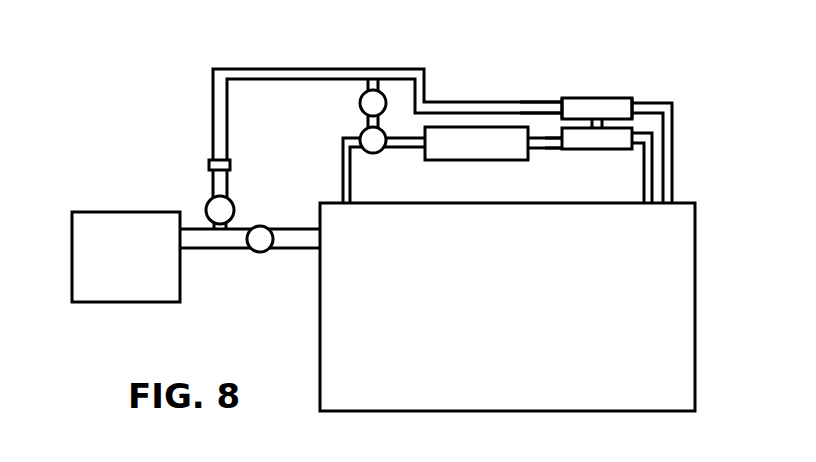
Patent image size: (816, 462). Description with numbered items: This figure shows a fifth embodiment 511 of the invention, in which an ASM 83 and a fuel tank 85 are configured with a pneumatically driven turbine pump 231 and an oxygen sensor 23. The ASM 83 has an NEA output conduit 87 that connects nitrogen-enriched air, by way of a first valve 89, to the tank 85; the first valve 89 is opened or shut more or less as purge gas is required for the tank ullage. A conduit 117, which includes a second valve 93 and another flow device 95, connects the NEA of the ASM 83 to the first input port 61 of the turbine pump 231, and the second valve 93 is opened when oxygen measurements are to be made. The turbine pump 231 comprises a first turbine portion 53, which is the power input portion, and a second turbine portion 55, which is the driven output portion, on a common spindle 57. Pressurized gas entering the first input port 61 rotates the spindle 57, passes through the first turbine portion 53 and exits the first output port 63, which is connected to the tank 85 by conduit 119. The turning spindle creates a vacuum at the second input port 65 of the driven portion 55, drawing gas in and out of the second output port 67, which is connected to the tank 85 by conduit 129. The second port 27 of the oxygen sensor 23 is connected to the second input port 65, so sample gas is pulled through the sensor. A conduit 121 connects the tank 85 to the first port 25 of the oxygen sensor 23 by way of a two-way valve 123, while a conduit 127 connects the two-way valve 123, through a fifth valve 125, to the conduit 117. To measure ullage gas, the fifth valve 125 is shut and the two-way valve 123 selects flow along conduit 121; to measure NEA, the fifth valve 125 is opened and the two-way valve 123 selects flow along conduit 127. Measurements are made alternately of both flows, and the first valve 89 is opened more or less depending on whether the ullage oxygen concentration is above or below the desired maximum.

The fifth embodiment 511 is at (143, 65).
The turbine pump 231 is at (612, 101).
The conduit 117 is at (243, 68).
The conduit 127 is at (384, 85).
The fifth valve 125 is at (360, 108).
The two-way valve 123 is at (360, 158).
The conduit 121 is at (342, 167).
The first port 25 is at (415, 150).
The oxygen sensor 23 is at (472, 162).
The second port 27 is at (540, 149).
The second input port 65 is at (553, 150).
The second turbine portion 55 is at (620, 149).
The first turbine portion 53 is at (596, 98).
The spindle 57 is at (556, 112).
The first input port 61 is at (548, 101).
The first output port 63 is at (643, 102).
The second output port 67 is at (636, 136).
The conduit 119 is at (672, 103).
The conduit 129 is at (642, 166).
The fuel tank 85 is at (680, 203).
The ASM 83 is at (125, 212).
The conduit 87 is at (203, 250).
The first valve 89 is at (258, 252).
The second valve 93 is at (206, 200).
The flow device 95 is at (208, 162).